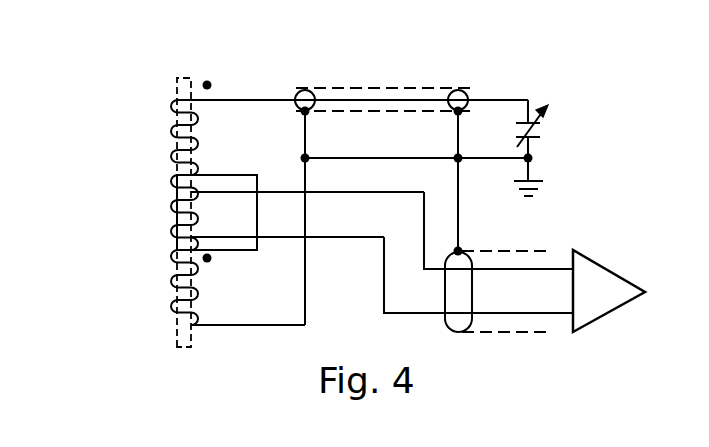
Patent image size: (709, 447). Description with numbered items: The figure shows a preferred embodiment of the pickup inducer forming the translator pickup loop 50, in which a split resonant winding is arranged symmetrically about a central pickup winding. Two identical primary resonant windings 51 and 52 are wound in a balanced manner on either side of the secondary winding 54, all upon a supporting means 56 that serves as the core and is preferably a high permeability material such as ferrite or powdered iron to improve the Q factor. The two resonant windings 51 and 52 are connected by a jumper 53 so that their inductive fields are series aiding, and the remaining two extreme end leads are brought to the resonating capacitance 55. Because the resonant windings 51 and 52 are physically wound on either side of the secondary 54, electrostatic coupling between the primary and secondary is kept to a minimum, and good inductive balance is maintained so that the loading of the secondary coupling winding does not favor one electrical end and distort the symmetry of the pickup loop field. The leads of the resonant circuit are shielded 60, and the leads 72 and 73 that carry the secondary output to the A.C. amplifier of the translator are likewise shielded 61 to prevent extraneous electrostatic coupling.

The translator pickup loop 50 is at (345, 47).
The primary resonant winding 51 is at (200, 141).
The primary resonant winding 52 is at (200, 279).
The jumper 53 is at (236, 175).
The secondary winding 54 is at (206, 217).
The resonating capacitance 55 is at (553, 128).
The supporting means 56 is at (185, 78).
The shield for resonant circuit leads 60 is at (463, 90).
The shield for coupling leads 61 is at (463, 248).
The amplifier input lead 72 is at (553, 266).
The amplifier input lead 73 is at (560, 318).